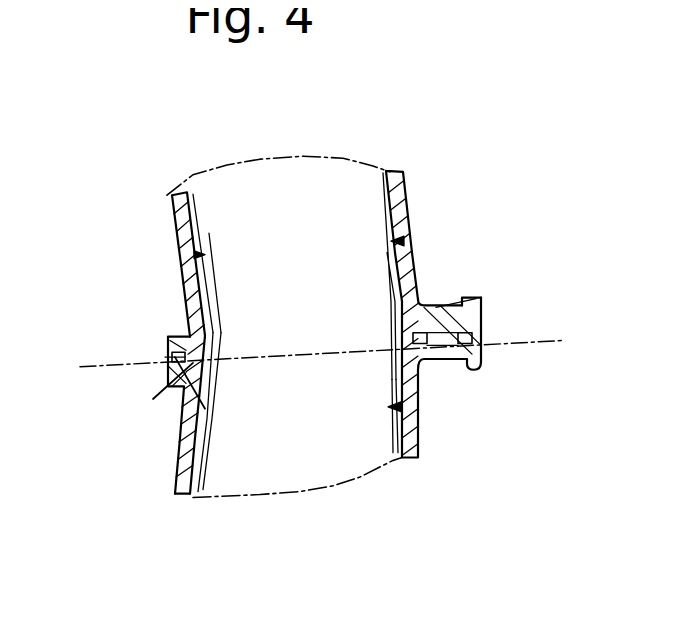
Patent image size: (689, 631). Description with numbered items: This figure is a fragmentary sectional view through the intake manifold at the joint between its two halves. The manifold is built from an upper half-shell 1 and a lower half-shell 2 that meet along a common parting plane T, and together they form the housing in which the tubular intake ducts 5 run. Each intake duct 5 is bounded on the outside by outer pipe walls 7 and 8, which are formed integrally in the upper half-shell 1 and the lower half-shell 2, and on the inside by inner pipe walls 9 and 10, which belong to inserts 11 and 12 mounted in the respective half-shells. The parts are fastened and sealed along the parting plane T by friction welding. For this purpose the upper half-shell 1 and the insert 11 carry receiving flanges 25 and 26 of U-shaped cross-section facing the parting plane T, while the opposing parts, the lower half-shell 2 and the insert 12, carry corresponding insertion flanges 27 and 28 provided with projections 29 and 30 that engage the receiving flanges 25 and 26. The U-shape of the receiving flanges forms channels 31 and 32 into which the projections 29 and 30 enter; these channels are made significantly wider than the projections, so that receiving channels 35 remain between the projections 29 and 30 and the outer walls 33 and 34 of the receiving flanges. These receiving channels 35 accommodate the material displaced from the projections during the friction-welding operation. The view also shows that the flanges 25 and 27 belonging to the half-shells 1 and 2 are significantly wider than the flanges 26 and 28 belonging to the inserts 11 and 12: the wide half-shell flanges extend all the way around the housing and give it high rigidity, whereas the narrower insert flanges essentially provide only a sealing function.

The upper half-shell 1 is at (390, 161).
The lower half-shell 2 is at (410, 448).
The intake ducts 5 is at (300, 176).
The outer pipe wall 7 is at (393, 230).
The outer pipe wall 8 is at (392, 400).
The inner pipe wall 9 is at (188, 246).
The inner pipe wall 10 is at (177, 438).
The insert 11 is at (175, 201).
The insert 12 is at (175, 483).
The receiving flange 25 is at (472, 291).
The receiving flange 26 is at (165, 330).
The insertion flange 27 is at (474, 351).
The insertion flange 28 is at (179, 386).
The projection 29 is at (447, 351).
The projection 30 is at (164, 345).
The channel 31 is at (424, 303).
The channel 32 is at (155, 359).
The outer wall 33 is at (467, 331).
The outer wall 34 is at (180, 373).
The receiving channels 35 is at (477, 311).
The parting plane T is at (578, 349).